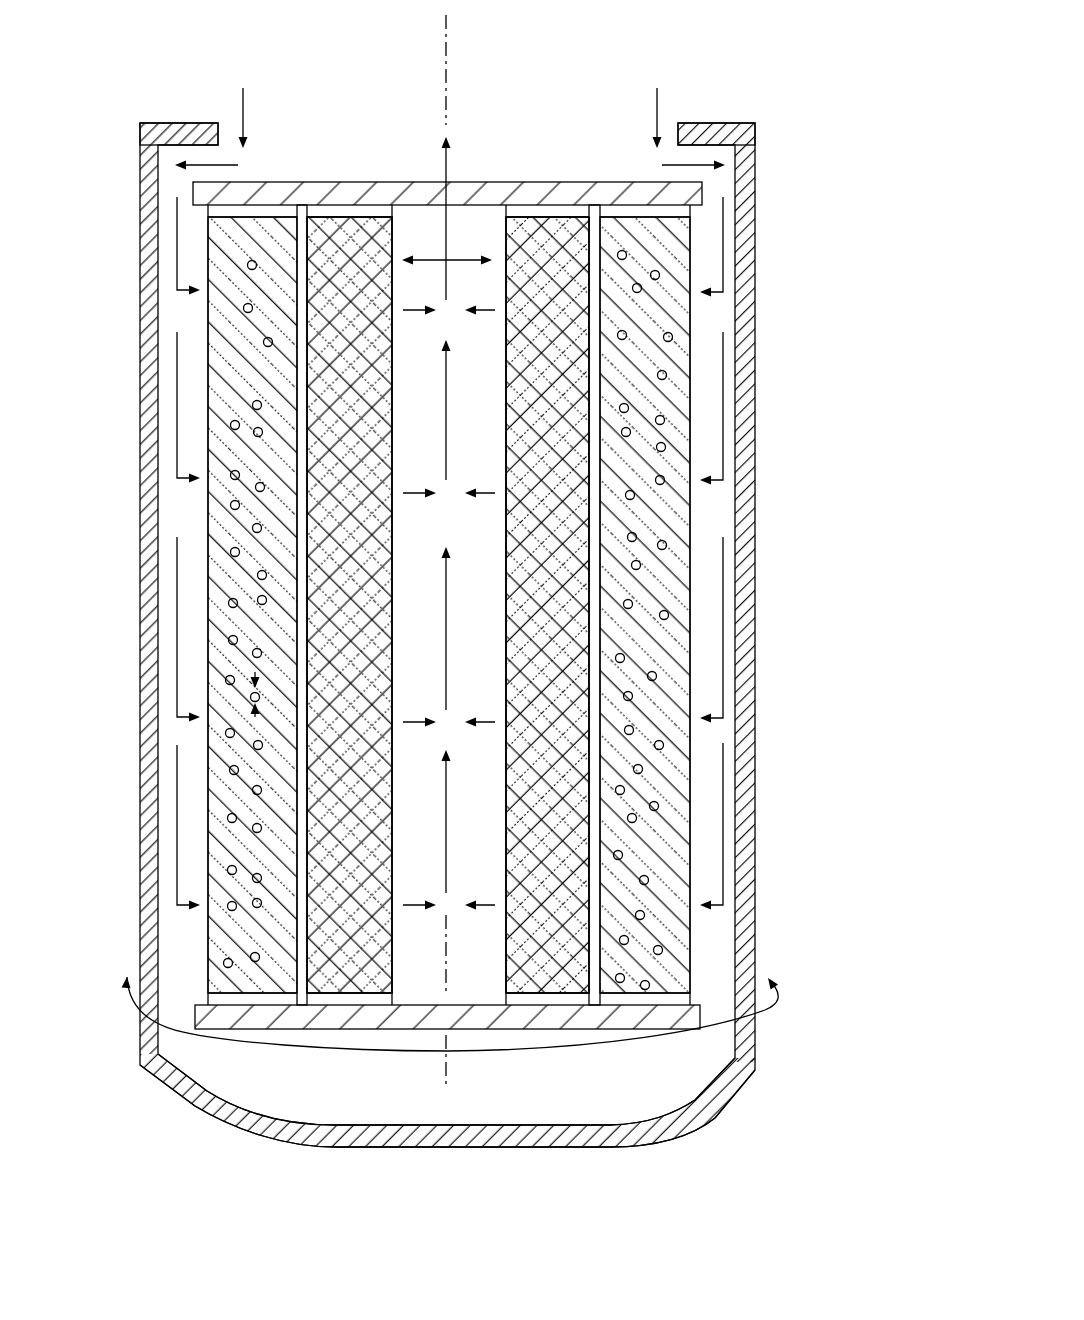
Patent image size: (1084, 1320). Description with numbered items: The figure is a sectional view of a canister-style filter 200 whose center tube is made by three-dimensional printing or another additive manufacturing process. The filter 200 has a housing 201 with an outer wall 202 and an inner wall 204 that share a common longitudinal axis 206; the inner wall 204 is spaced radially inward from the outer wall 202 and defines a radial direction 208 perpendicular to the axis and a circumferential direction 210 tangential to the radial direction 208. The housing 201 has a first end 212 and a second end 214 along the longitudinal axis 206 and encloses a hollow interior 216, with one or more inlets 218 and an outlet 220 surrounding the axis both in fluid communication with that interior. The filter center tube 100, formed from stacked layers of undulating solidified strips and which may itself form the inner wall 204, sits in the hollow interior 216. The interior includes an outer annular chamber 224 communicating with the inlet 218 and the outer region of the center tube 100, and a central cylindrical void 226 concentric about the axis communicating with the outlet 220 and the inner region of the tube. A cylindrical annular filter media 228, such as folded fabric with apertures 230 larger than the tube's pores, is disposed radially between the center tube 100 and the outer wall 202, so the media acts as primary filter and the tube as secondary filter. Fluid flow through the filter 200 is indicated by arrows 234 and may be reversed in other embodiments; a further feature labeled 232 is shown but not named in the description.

The filter center tube 100 is at (405, 243).
The filter 200 is at (724, 60).
The housing 201 is at (752, 116).
The outer wall 202 is at (748, 663).
The inner wall 204 is at (505, 943).
The longitudinal axis 206 is at (449, 93).
The radial direction 208 is at (455, 258).
The circumferential direction 210 is at (775, 1005).
The first end 212 is at (172, 128).
The second end 214 is at (557, 1137).
The hollow interior 216 is at (647, 1087).
The inlet 218 is at (217, 153).
The outlet 220 is at (457, 228).
The outer annular chamber 224 is at (702, 586).
The central cylindrical void 226 is at (418, 285).
The filter media 228 is at (253, 548).
The apertures 230 is at (257, 522).
The flow through perforation 232 is at (257, 718).
The arrows 234 is at (246, 118).